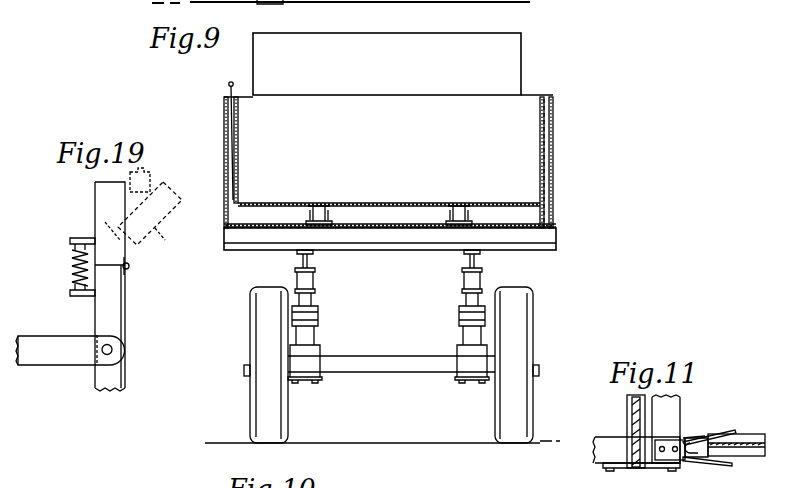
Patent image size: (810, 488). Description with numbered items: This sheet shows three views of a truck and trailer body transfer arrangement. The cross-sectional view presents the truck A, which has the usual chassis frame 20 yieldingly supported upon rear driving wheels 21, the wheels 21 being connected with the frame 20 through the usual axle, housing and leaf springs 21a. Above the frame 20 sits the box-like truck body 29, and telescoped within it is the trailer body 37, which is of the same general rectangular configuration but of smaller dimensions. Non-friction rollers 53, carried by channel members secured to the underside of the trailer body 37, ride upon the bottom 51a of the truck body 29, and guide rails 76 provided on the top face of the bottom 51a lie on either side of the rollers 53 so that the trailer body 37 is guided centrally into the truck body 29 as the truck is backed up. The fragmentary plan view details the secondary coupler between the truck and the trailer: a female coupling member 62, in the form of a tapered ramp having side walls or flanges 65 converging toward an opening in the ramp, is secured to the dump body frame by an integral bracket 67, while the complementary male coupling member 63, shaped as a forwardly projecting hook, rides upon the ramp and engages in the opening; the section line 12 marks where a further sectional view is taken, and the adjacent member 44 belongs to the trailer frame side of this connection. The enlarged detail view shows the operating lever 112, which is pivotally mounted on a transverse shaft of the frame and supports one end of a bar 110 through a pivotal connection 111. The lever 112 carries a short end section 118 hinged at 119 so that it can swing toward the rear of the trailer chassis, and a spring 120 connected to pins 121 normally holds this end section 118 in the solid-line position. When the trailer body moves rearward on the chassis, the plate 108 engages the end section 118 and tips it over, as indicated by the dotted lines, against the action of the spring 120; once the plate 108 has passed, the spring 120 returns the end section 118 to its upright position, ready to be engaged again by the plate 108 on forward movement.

In FIG. 9, the truck body 29 is at (553, 148).
In FIG. 9, the trailer body 37 is at (540, 124).
In FIG. 9, the truck A is at (558, 120).
In FIG. 9, the bottom of truck body 51a is at (406, 216).
In FIG. 9, the non-friction rollers 53 is at (322, 206).
In FIG. 9, the guide rails 76 is at (330, 222).
In FIG. 9, the chassis frame 20 is at (315, 290).
In FIG. 9, the axle, housing and leaf springs 21a is at (318, 329).
In FIG. 9, the rear driving wheels 21 is at (268, 327).
In FIG. 9, the section line 12 is at (586, 450).
In FIG. 19, the lever 112 is at (112, 320).
In FIG. 19, the bar 110 is at (40, 352).
In FIG. 19, the pivotal connection 111 is at (115, 349).
In FIG. 19, the pins 121 is at (70, 240).
In FIG. 19, the spring 120 is at (70, 267).
In FIG. 19, the hinge 119 is at (130, 266).
In FIG. 19, the short end section 118 is at (98, 196).
In FIG. 19, the plate 108 is at (152, 172).
In FIG. 11, the integral brackets 67 is at (660, 464).
In FIG. 11, the complementary coupling members 63 is at (693, 458).
In FIG. 11, the coupling members 62 is at (718, 424).
In FIG. 11, the side walls or flanges 65 is at (690, 437).
In FIG. 11, the hitch arm 44 is at (740, 434).